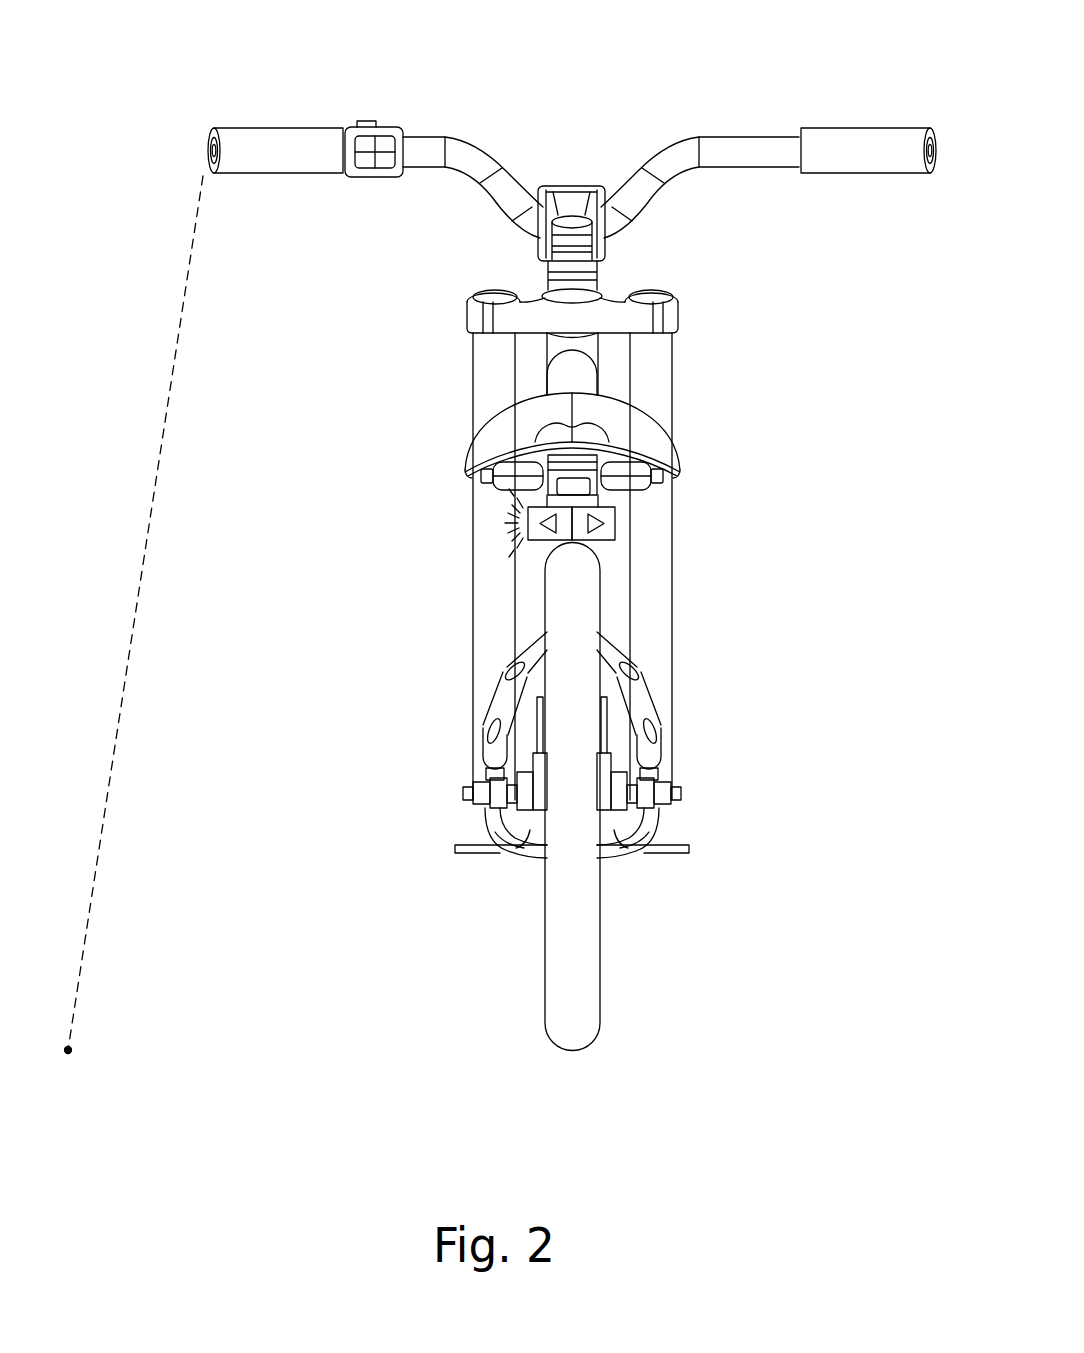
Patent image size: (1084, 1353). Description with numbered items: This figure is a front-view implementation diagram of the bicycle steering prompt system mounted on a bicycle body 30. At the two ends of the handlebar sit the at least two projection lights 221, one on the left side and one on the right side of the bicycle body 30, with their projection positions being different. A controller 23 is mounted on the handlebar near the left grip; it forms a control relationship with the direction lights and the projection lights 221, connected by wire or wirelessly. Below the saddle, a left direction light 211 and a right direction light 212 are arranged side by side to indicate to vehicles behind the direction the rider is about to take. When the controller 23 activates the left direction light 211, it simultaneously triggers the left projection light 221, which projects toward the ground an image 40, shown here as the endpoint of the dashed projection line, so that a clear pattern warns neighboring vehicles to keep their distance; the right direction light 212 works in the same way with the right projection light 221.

The bicycle body 30 is at (724, 138).
The projection light 221 is at (209, 128).
The controller 23 is at (388, 126).
The left direction light 211 is at (548, 540).
The right direction light 212 is at (596, 540).
The image 40 is at (70, 1048).